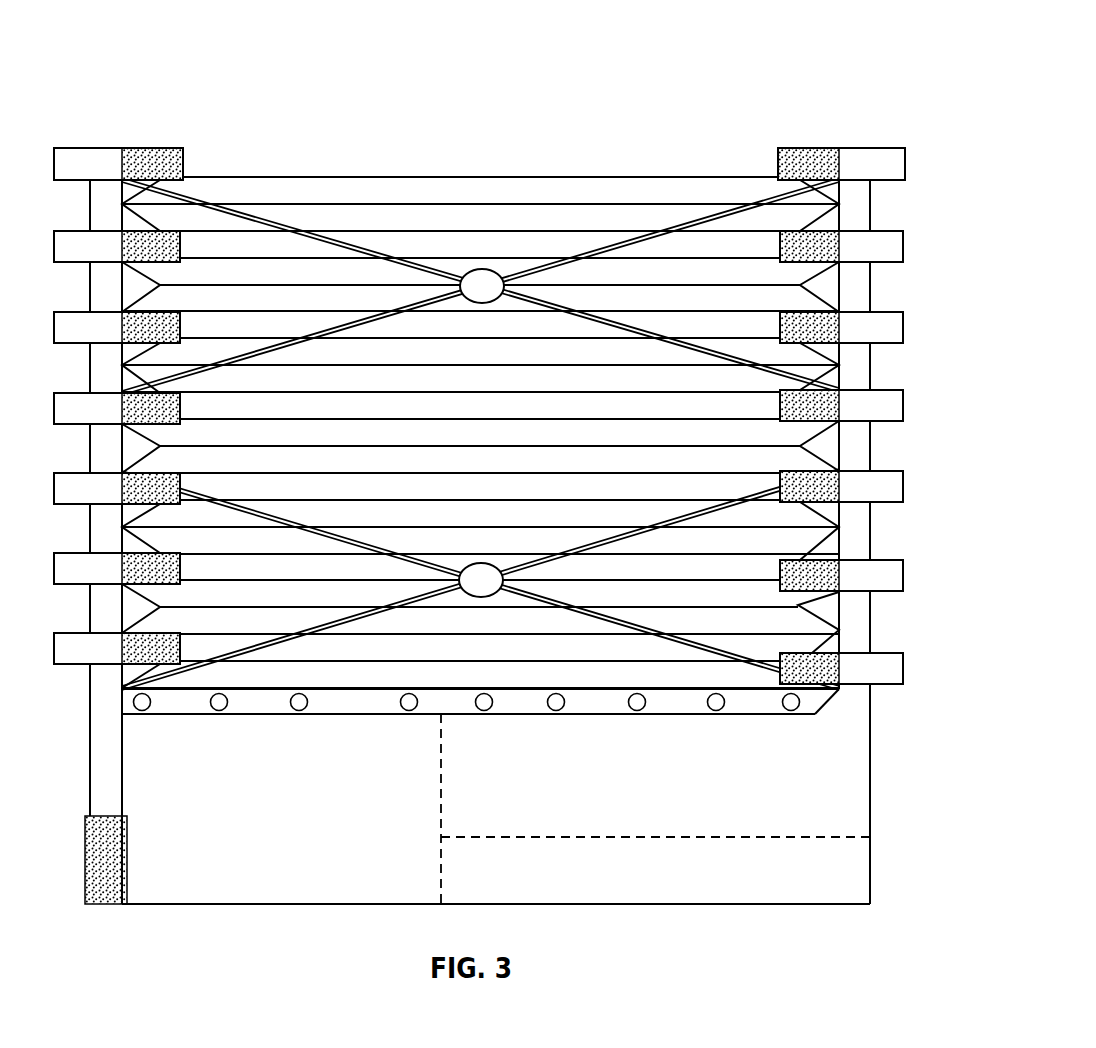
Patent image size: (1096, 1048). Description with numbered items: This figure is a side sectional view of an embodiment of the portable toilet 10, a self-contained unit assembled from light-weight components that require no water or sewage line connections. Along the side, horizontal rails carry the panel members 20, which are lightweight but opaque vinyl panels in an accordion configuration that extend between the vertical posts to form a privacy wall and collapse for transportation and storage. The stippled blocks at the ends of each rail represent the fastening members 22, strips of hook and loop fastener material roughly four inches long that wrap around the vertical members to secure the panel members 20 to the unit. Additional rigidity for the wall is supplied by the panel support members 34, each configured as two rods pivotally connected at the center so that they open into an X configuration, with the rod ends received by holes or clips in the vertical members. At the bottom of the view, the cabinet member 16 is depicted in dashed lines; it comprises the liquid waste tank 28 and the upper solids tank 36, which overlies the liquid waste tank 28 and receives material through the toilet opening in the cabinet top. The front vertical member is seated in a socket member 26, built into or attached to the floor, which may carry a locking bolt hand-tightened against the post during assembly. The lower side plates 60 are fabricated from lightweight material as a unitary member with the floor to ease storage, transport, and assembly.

The portable toilet 10 is at (770, 45).
The cabinet member 16 is at (880, 820).
The panel members 20 is at (499, 427).
The fastening members 22 is at (162, 160).
The socket member 26 is at (97, 871).
The liquid waste tank 28 is at (805, 887).
The panel support members 34 is at (530, 268).
The upper solids tank 36 is at (797, 802).
The lower side plates 60 is at (295, 892).